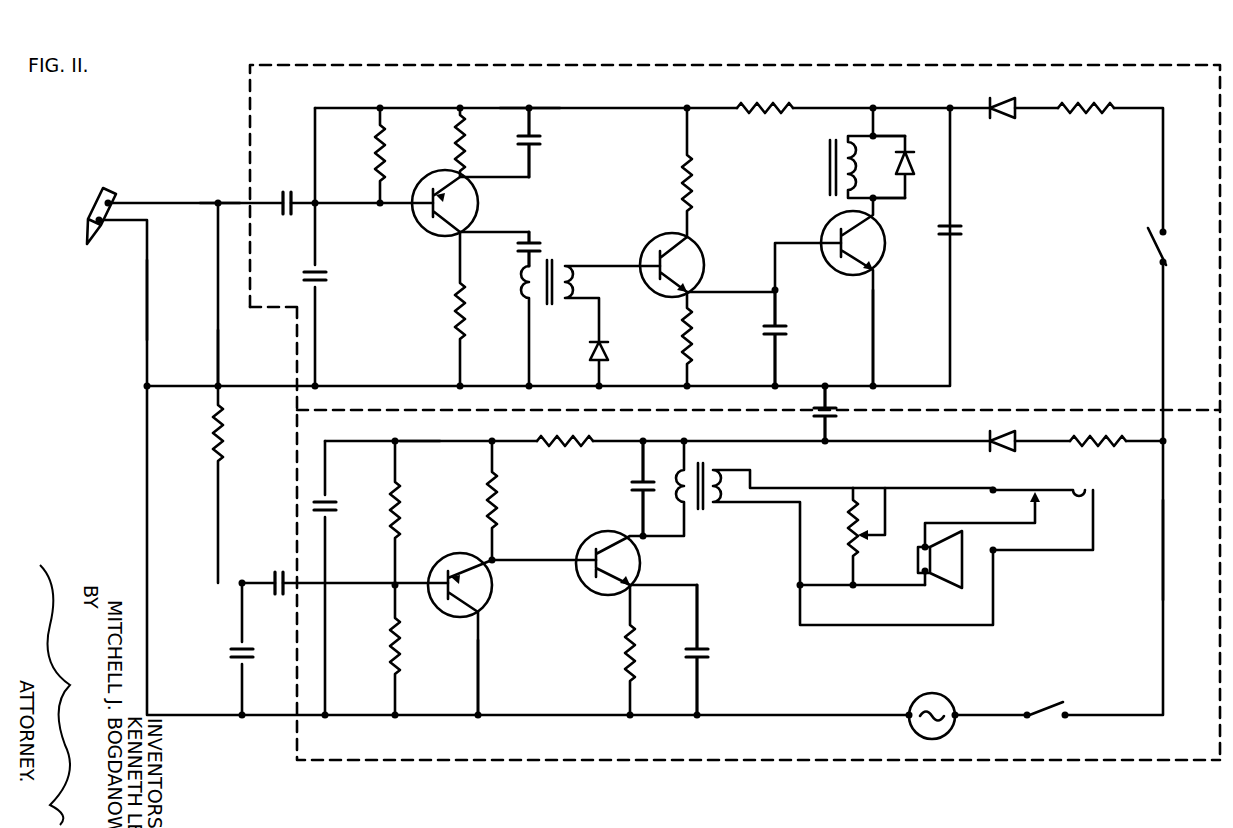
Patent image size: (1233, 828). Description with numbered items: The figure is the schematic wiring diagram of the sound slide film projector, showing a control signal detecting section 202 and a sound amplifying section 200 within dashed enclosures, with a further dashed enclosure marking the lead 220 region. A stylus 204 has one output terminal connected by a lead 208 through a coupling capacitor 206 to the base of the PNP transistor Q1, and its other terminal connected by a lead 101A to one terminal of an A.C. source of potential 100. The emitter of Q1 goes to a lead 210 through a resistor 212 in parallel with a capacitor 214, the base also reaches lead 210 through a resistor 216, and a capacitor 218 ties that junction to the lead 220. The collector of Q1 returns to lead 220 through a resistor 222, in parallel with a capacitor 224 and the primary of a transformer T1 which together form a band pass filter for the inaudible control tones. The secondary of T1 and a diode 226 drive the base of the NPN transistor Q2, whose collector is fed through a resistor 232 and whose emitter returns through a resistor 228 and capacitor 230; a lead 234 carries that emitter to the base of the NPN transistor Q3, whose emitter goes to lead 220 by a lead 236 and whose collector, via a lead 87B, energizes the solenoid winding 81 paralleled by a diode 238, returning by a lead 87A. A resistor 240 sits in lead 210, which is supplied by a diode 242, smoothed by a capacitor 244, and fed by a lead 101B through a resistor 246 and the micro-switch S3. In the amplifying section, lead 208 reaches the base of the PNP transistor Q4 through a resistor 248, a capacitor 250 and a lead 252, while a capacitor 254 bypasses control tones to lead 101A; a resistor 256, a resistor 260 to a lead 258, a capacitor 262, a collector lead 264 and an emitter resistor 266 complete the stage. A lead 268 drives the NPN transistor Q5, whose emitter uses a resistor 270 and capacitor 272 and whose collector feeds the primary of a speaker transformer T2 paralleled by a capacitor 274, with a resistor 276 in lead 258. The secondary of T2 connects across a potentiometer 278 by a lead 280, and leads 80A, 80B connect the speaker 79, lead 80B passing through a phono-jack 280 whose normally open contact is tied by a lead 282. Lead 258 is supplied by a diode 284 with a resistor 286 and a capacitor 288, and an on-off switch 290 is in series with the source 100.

The control signal detecting section 202 is at (1038, 68).
The sound amplifying section 200 is at (1010, 760).
The lead 220 is at (385, 390).
The stylus 204 is at (108, 188).
The lead 101A is at (146, 295).
The lead 101B is at (1165, 540).
The coupling capacitor 206 is at (285, 192).
The lead 208 is at (228, 188).
The lead 210 is at (531, 106).
The resistor 212 is at (455, 164).
The capacitor 214 is at (542, 142).
The resistor 216 is at (395, 124).
The capacitor 218 is at (328, 277).
The resistor 222 is at (456, 310).
The capacitor 224 is at (516, 249).
The diode 226 is at (608, 348).
The resistor 228 is at (692, 345).
The capacitor 230 is at (788, 332).
The resistor 232 is at (692, 188).
The lead 234 is at (800, 228).
The lead 236 is at (883, 320).
The diode 238 is at (914, 162).
The resistor 240 is at (775, 100).
The diode 242 is at (1005, 122).
The capacitor 244 is at (963, 232).
The resistor 246 is at (1095, 100).
The resistor 248 is at (224, 438).
The capacitor 250 is at (277, 570).
The lead 252 is at (221, 360).
The capacitor 254 is at (229, 653).
The resistor 256 is at (403, 650).
The lead 258 is at (420, 440).
The resistor 260 is at (403, 500).
The capacitor 262 is at (328, 512).
The lead 264 is at (480, 680).
The resistor 266 is at (500, 498).
The lead 268 is at (550, 544).
The resistor 270 is at (622, 665).
The capacitor 272 is at (710, 658).
The capacitor 274 is at (630, 492).
The resistor 276 is at (565, 438).
The potentiometer 278 is at (857, 495).
The phono-jack 280 is at (752, 475).
The lead 282 is at (912, 628).
The diode 284 is at (1013, 414).
The resistor 286 is at (1120, 416).
The capacitor 288 is at (838, 412).
The on-off switch 290 is at (1050, 698).
The speaker 79 is at (935, 588).
The lead 80A is at (870, 572).
The lead 80B is at (985, 512).
The solenoid winding 81 is at (828, 138).
The lead 87A is at (876, 133).
The lead 87B is at (876, 203).
The A.C. source of potential 100 is at (946, 698).
The PNP transistor Q1 is at (484, 190).
The NPN transistor Q2 is at (705, 265).
The NPN transistor Q3 is at (883, 238).
The PNP transistor Q4 is at (490, 606).
The NPN transistor Q5 is at (642, 565).
The transformer T1 is at (553, 260).
The speaker transformer T2 is at (706, 446).
The micro-switch S3 is at (1148, 250).